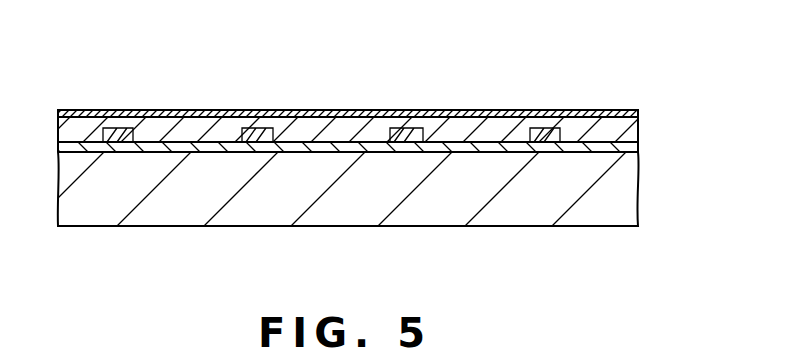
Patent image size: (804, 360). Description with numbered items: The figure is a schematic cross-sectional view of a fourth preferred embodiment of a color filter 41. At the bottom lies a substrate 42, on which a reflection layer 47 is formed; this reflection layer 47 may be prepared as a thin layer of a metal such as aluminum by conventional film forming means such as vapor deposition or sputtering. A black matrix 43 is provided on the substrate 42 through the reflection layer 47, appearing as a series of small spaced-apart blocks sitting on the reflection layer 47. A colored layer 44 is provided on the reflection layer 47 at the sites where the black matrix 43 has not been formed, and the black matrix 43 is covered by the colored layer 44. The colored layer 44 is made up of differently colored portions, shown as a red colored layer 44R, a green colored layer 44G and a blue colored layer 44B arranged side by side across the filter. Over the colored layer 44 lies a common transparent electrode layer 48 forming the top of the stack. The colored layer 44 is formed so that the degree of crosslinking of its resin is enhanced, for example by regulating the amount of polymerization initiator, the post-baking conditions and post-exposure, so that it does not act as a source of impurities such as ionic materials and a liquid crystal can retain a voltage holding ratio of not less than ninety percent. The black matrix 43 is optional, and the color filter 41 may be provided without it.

The color filter 41 is at (531, 74).
The substrate 42 is at (628, 198).
The black matrix 43 is at (118, 120).
The colored layer 44 is at (653, 129).
The red colored layer 44R is at (165, 123).
The green colored layer 44G is at (307, 125).
The blue colored layer 44B is at (79, 122).
The reflection layer 47 is at (630, 148).
The common transparent electrode layer 48 is at (628, 110).